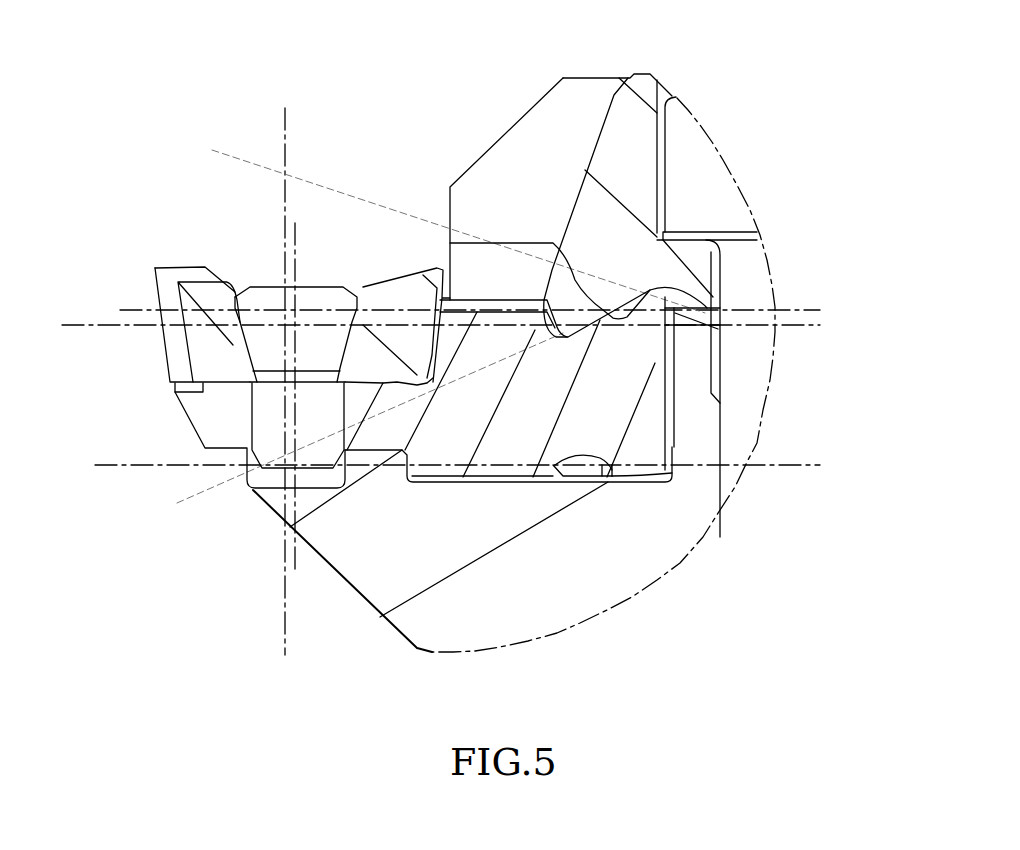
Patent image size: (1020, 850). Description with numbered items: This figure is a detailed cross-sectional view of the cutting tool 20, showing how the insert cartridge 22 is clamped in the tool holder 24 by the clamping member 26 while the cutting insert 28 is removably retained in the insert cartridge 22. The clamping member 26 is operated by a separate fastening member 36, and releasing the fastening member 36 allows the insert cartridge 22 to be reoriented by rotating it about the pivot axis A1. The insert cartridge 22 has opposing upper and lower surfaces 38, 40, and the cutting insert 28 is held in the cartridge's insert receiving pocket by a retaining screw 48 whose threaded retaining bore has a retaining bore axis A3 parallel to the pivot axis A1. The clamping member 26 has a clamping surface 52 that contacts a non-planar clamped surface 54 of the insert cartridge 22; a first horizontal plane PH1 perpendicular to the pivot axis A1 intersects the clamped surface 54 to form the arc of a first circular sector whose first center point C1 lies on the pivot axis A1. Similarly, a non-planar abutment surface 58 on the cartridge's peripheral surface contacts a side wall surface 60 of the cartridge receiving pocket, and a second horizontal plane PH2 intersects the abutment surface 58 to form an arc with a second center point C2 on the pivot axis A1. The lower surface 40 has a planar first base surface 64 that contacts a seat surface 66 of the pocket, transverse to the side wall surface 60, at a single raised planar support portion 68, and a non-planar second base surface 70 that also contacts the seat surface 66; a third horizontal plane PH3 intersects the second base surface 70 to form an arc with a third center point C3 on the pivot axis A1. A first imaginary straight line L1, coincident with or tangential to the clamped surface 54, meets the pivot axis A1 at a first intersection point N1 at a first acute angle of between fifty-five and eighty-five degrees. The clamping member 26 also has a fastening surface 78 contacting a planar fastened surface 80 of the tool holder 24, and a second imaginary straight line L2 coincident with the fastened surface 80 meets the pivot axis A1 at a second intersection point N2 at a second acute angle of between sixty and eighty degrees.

The cutting tool 20 is at (700, 90).
The insert cartridge 22 is at (587, 423).
The tool holder 24 is at (524, 597).
The clamping member 26 is at (615, 143).
The cutting insert 28 is at (168, 290).
The fastening member 36 is at (706, 194).
The upper surface 38 is at (499, 306).
The lower surface 40 is at (483, 484).
The retaining screw 48 is at (316, 297).
The clamping surface 52 is at (575, 328).
The clamped surface 54 is at (588, 317).
The abutment surface 58 is at (703, 311).
The side wall surface 60 is at (673, 378).
The first base surface 64 is at (371, 463).
The seat surface 66 is at (624, 472).
The raised planar support portion 68 is at (401, 434).
The second base surface 70 is at (580, 465).
The fastening surface 78 is at (692, 333).
The fastened surface 80 is at (677, 302).
The pivot axis A1 is at (285, 383).
The retaining bore axis A3 is at (311, 383).
The first horizontal plane PH1 is at (416, 325).
The second horizontal plane PH2 is at (446, 305).
The third horizontal plane PH3 is at (430, 466).
The first imaginary straight line L1 is at (355, 428).
The second imaginary straight line L2 is at (445, 222).
The first intersection point N1 is at (283, 457).
The second intersection point N2 is at (283, 177).
The first center point C1 is at (283, 302).
The second center point C2 is at (283, 310).
The third center point C3 is at (283, 465).